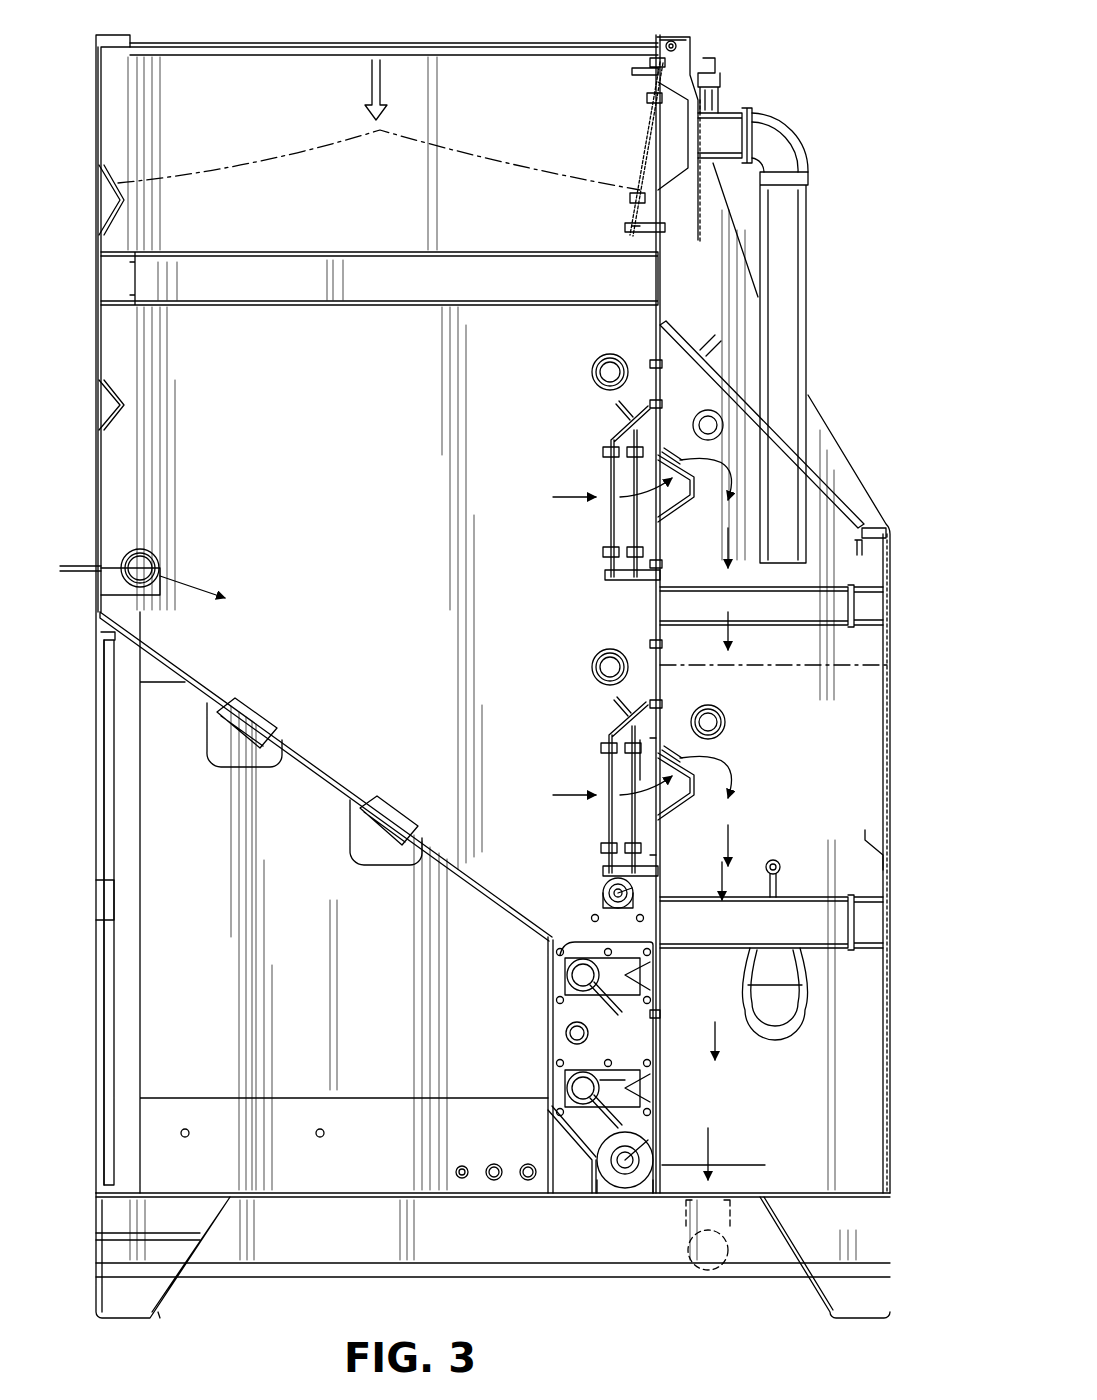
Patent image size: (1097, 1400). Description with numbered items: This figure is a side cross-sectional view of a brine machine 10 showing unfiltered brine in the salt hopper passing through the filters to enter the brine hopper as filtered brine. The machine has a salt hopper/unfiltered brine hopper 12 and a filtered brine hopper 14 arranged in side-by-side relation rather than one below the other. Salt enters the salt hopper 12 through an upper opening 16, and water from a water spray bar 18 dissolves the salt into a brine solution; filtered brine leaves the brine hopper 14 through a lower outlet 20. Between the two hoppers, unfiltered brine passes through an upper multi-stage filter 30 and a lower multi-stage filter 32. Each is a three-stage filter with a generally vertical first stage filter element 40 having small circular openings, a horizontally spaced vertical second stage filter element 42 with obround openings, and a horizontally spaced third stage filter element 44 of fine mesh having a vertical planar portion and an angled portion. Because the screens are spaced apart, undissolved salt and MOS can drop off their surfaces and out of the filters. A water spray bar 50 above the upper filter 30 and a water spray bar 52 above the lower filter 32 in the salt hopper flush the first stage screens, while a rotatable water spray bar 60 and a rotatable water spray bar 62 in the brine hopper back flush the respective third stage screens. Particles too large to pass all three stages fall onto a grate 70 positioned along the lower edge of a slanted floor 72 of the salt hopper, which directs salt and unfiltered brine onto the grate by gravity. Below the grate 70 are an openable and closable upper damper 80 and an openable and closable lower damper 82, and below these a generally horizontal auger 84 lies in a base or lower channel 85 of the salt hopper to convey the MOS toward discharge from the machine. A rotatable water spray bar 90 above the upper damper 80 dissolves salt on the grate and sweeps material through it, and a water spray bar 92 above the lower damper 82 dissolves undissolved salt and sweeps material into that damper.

The brine machine 10 is at (890, 72).
The salt hopper/unfiltered brine hopper 12 is at (215, 40).
The filtered brine hopper 14 is at (896, 512).
The upper opening 16 is at (316, 90).
The water spray bar 18 is at (150, 552).
The lower outlet 20 is at (728, 1270).
The upper multi-stage filter 30 is at (613, 590).
The lower multi-stage filter 32 is at (570, 734).
The first stage filter element 40 is at (611, 470).
The second stage filter element 42 is at (634, 525).
The third stage filter element 44 is at (680, 468).
The water spray bar 50 is at (600, 362).
The water spray bar 52 is at (600, 657).
The rotatable water spray bar 60 is at (712, 422).
The rotatable water spray bar 62 is at (716, 718).
The grate 70 is at (595, 940).
The slanted floor 72 is at (305, 762).
The upper damper 80 is at (620, 1005).
The lower damper 82 is at (620, 1118).
The horizontal auger 84 is at (627, 1180).
The base or sump or lower channel 85 is at (545, 1150).
The rotatable water spray bar 90 is at (606, 888).
The water spray bar 92 is at (566, 1027).